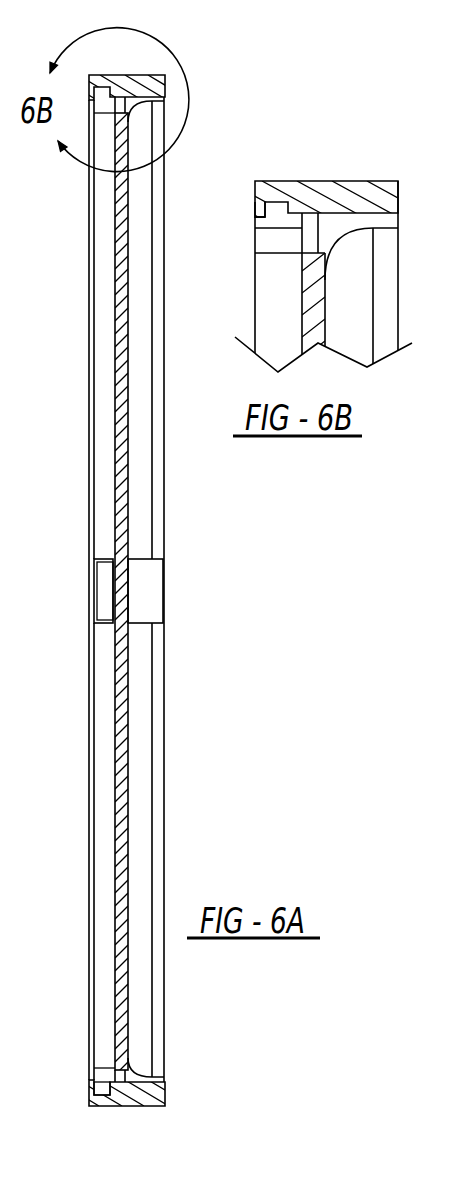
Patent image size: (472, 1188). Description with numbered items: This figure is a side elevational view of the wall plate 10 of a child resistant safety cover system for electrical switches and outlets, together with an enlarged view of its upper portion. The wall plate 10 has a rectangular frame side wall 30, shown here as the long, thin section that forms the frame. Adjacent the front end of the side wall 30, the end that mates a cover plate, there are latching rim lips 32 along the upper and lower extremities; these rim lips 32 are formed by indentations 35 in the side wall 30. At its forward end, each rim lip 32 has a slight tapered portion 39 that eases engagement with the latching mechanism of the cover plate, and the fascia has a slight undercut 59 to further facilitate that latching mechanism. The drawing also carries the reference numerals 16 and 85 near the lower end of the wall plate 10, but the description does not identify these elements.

In FIG. 6A, the wall plate 10 is at (197, 62).
In FIG. 6B, the wall plate 10 is at (337, 158).
In FIG. 6A, the lower end 16 is at (138, 1092).
In FIG. 6A, the rectangular frame side wall 30 is at (137, 1106).
In FIG. 6B, the rectangular frame side wall 30 is at (376, 181).
In FIG. 6A, the latching rim lip 32 is at (92, 587).
In FIG. 6B, the latching rim lip 32 is at (255, 211).
In FIG. 6A, the indentation 35 is at (108, 573).
In FIG. 6B, the indentation 35 is at (276, 205).
In FIG. 6B, the tapered portion 39 is at (262, 221).
In FIG. 6B, the undercut 59 is at (300, 238).
In FIG. 6A, the recess 85 is at (97, 1082).